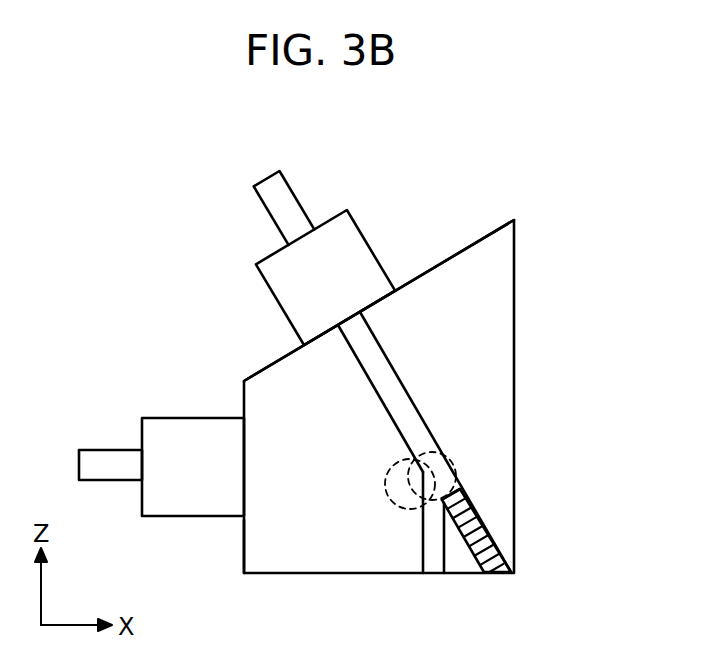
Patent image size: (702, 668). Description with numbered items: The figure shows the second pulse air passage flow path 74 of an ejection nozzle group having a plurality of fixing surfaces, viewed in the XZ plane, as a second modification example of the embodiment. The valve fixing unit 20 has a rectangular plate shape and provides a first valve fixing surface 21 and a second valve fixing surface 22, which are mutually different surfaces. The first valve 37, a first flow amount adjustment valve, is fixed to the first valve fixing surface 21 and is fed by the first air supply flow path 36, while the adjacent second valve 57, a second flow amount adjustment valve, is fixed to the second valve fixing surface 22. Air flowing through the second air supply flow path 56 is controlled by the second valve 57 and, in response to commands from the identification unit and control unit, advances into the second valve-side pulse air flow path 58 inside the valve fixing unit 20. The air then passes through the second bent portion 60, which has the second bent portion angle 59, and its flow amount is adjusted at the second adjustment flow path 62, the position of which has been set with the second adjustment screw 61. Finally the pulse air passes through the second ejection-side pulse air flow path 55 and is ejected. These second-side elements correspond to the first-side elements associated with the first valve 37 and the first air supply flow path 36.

The valve fixing unit 20 is at (501, 292).
The first valve fixing surface 21 is at (242, 550).
The second valve fixing surface 22 is at (494, 229).
The first air supply flow path 36 is at (100, 465).
The first valve 37 is at (187, 435).
The second ejection-side pulse air flow path 55 is at (434, 560).
The second air supply flow path 56 is at (288, 213).
The second valve 57 is at (345, 257).
The second valve-side pulse air flow path 58 is at (392, 395).
The second bent portion angle 59 is at (401, 512).
The second bent portion 60 is at (412, 452).
The second adjustment screw 61 is at (497, 574).
The second adjustment flow path 62 is at (457, 477).
The second pulse air passage flow path 74 is at (383, 352).